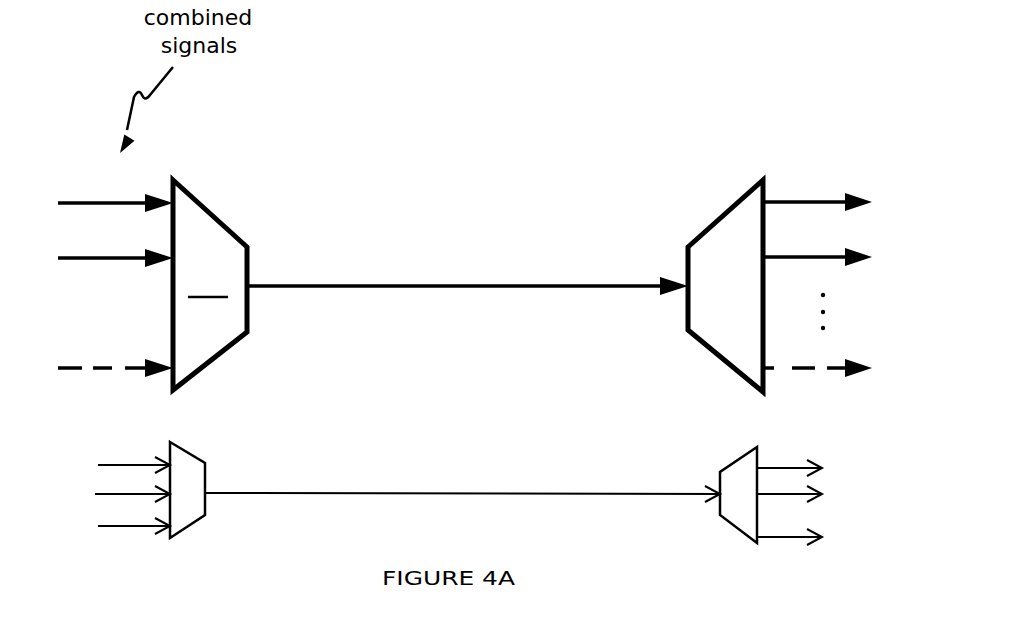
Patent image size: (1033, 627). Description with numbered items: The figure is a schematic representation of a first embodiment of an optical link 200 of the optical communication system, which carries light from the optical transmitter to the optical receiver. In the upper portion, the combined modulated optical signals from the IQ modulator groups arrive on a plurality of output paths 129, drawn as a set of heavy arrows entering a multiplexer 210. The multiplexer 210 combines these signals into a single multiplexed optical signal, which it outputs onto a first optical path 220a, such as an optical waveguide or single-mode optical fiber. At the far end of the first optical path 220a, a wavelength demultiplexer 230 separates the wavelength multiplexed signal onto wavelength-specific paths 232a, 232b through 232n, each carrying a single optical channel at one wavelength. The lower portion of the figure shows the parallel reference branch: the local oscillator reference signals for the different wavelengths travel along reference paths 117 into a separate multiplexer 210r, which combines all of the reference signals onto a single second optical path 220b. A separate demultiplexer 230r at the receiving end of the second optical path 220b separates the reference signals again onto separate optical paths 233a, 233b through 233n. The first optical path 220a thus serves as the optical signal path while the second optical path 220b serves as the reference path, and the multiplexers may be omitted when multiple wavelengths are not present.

The optical link 200 is at (772, 28).
The output paths 129 is at (95, 200).
The multiplexer 210 is at (185, 335).
The first optical path 220a is at (461, 216).
The demultiplexer 230 is at (745, 301).
The wavelength-specific path 232a is at (788, 195).
The wavelength-specific path 232b is at (854, 260).
The wavelength-specific path 232n is at (805, 378).
The reference paths 117 is at (117, 460).
The multiplexer 210r is at (193, 468).
The second optical path 220b is at (425, 488).
The demultiplexer 230r is at (725, 462).
The optical path 233a is at (836, 465).
The optical path 233b is at (837, 494).
The optical path 233n is at (817, 560).